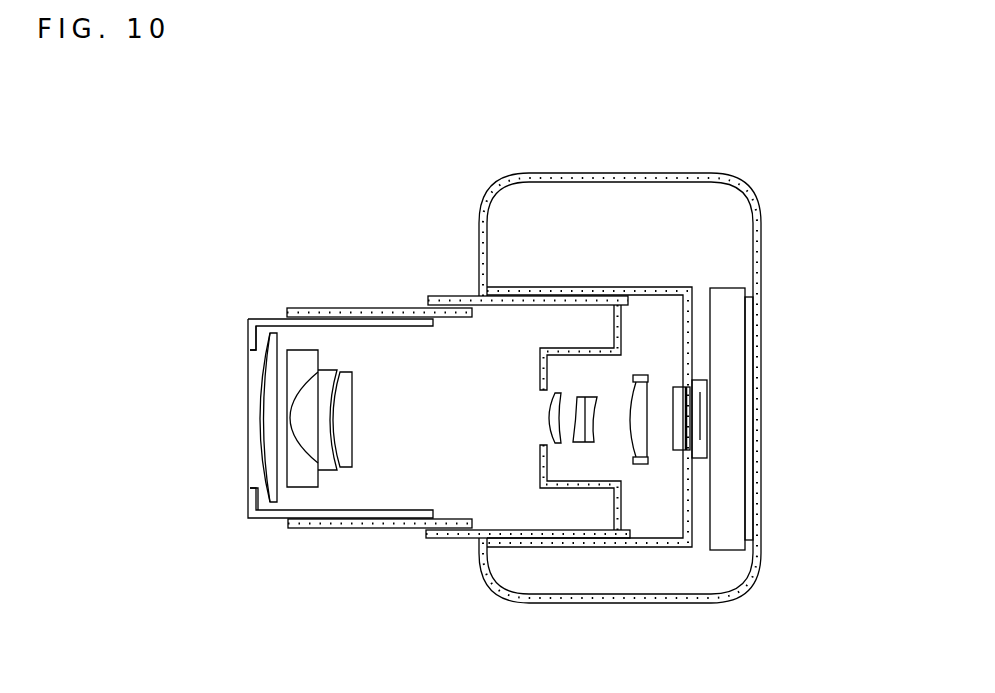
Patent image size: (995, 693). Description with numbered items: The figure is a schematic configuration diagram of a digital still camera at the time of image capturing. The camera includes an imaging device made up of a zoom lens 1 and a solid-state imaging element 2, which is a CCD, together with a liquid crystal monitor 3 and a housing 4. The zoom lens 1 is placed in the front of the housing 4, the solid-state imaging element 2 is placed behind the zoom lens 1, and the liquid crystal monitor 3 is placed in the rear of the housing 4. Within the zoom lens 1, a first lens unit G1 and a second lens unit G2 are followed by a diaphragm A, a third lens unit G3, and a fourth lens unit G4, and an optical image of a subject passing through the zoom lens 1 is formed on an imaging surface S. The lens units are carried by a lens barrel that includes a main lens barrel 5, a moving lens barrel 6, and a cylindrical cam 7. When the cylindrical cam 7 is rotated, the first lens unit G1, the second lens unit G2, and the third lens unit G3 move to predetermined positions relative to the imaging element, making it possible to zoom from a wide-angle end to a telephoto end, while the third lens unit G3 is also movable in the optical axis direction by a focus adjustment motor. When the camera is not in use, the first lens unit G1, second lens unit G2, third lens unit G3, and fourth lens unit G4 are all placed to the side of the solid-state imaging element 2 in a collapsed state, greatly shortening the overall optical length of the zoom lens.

The zoom lens 1 is at (455, 432).
The solid-state imaging element 2 is at (707, 383).
The liquid crystal monitor 3 is at (735, 298).
The housing 4 is at (482, 239).
The main lens barrel 5 is at (692, 483).
The moving lens barrel 6 is at (248, 512).
The cylindrical cam 7 is at (335, 522).
The imaging surface S is at (700, 410).
The diaphragm A is at (540, 437).
The first lens unit G1 is at (266, 378).
The second lens unit G2 is at (343, 390).
The third lens unit G3 is at (568, 412).
The fourth lens unit G4 is at (635, 432).